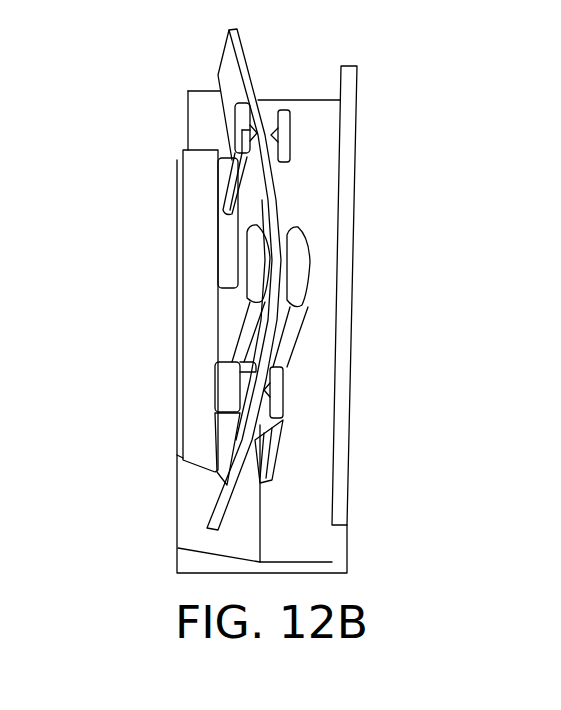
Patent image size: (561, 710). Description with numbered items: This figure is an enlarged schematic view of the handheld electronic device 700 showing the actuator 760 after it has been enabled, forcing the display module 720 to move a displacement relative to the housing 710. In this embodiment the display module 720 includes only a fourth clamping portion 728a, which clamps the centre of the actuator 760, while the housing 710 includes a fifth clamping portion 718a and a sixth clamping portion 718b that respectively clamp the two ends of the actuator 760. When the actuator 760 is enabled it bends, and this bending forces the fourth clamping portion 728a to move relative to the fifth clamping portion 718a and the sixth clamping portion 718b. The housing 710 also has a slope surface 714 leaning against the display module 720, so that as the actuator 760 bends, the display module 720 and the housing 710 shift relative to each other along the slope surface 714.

The handheld electronic device 700 is at (458, 577).
The housing 710 is at (356, 177).
The slope surface 714 is at (195, 510).
The display module 720 is at (196, 193).
The actuator 760 is at (228, 68).
The fifth clamping portion 718a is at (240, 130).
The fourth clamping portion 728a is at (257, 270).
The sixth clamping portion 718b is at (237, 383).